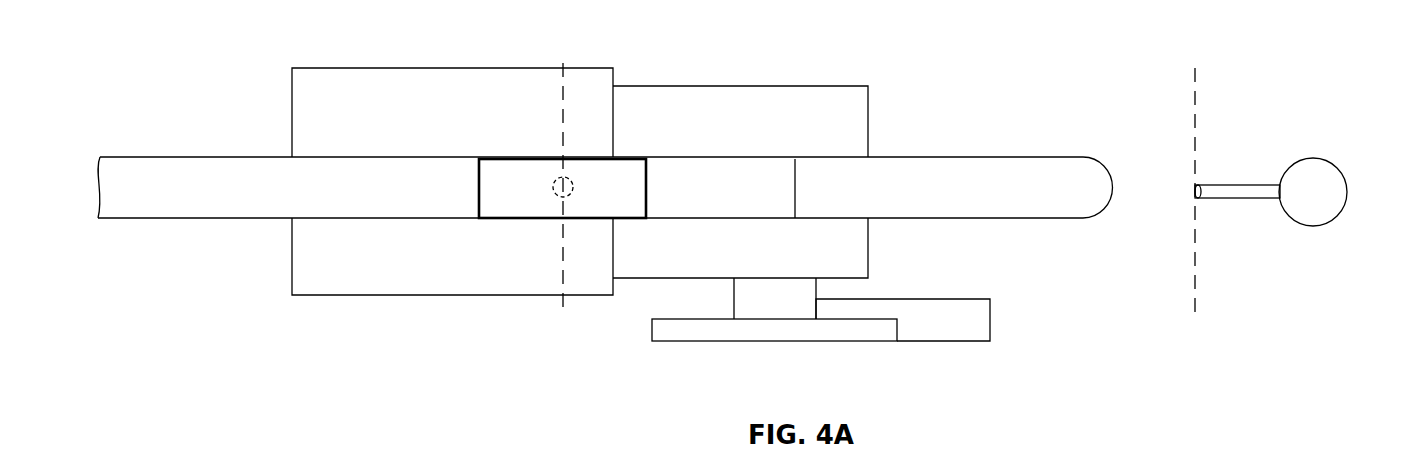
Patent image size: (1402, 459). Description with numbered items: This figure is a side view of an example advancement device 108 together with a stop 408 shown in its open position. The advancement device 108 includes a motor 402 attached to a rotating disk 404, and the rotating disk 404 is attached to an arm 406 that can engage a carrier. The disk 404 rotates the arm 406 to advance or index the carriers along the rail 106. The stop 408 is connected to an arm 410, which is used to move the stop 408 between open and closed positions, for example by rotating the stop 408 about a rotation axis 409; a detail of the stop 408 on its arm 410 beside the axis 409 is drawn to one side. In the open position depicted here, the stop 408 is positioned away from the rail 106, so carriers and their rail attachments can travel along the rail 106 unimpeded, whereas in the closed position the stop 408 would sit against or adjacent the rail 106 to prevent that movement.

The rail 106 is at (1083, 157).
The advancement device 108 is at (232, 118).
The motor 402 is at (775, 110).
The rotating disk 404 is at (835, 330).
The arm 406 is at (992, 322).
The stop 408 is at (479, 192).
The rotation axis 409 is at (563, 82).
The arm 410 is at (548, 185).